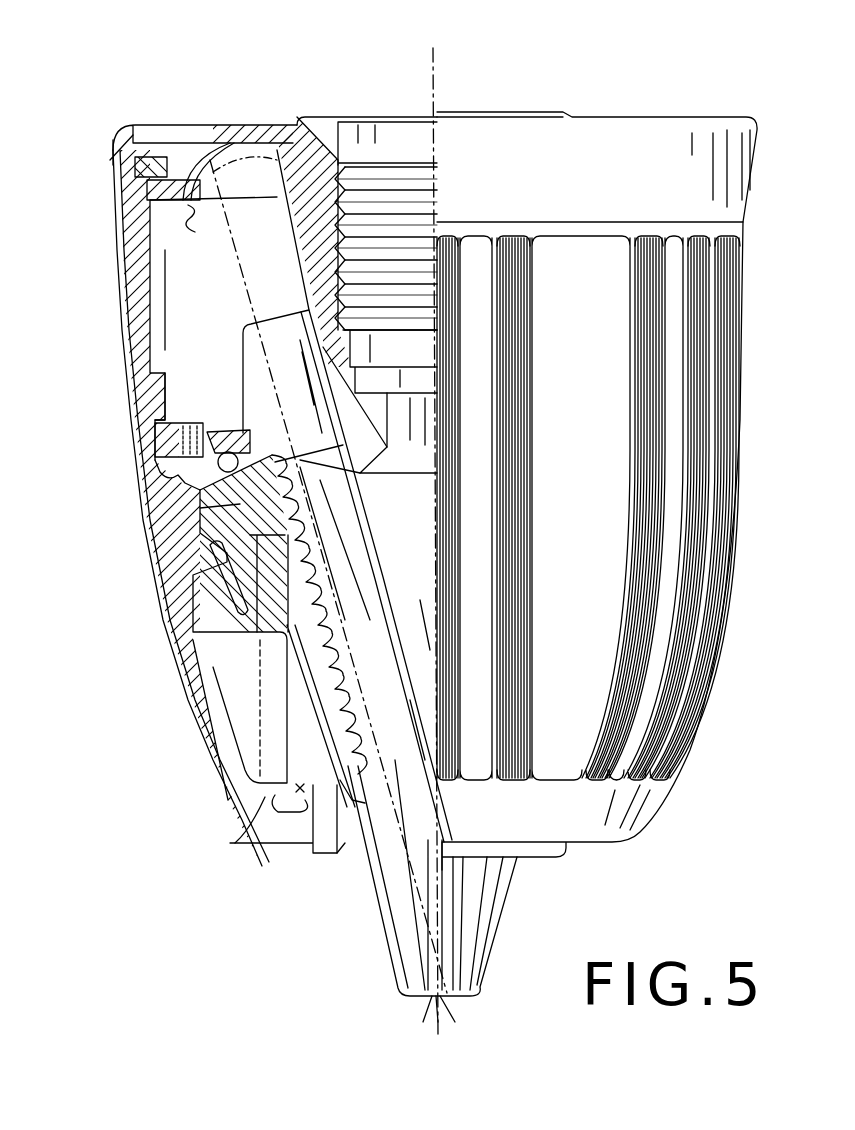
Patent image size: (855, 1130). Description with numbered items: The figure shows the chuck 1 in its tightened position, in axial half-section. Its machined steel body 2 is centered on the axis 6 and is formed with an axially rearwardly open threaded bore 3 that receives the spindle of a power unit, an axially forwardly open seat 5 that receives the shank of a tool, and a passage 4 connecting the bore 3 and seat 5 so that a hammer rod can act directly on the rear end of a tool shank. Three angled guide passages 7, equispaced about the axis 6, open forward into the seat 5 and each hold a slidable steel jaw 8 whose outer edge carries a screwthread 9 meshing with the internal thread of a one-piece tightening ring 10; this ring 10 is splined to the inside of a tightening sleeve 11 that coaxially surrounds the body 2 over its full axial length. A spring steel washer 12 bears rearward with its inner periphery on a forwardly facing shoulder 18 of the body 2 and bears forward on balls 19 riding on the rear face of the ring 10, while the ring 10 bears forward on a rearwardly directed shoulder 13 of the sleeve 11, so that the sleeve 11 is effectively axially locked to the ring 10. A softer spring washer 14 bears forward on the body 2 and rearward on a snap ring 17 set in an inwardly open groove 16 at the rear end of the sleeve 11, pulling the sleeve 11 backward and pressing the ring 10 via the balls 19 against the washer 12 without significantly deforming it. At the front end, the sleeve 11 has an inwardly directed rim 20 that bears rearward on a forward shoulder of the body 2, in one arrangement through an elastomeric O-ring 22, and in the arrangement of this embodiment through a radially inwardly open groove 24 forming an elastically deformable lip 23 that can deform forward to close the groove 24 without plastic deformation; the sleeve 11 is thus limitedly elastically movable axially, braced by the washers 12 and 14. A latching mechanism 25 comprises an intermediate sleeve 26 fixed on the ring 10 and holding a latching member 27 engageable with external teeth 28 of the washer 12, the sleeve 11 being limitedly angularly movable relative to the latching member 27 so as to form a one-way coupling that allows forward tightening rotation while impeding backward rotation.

The chuck 1 is at (737, 697).
The chuck body 2 is at (325, 142).
The threaded bore 3 is at (393, 200).
The passage 4 is at (420, 412).
The seat 5 is at (415, 510).
The axis 6 is at (438, 84).
The angled guide passages 7 is at (300, 690).
The jaw 8 is at (400, 950).
The screwthread 9 is at (305, 635).
The tightening ring 10 is at (200, 558).
The tightening sleeve 11 is at (722, 300).
The spring steel washer 12 is at (238, 430).
The shoulder 13 is at (228, 605).
The spring washer 14 is at (258, 145).
The groove 16 is at (128, 168).
The snap ring 17 is at (152, 155).
The shoulder 18 is at (240, 395).
The balls 19 is at (176, 478).
The rim 20 is at (300, 843).
The O-ring 22 is at (333, 832).
The lip 23 is at (287, 805).
The groove 24 is at (283, 852).
The latching mechanism 25 is at (108, 441).
The intermediate sleeve 26 is at (215, 507).
The latching member 27 is at (170, 440).
The external teeth 28 is at (262, 455).